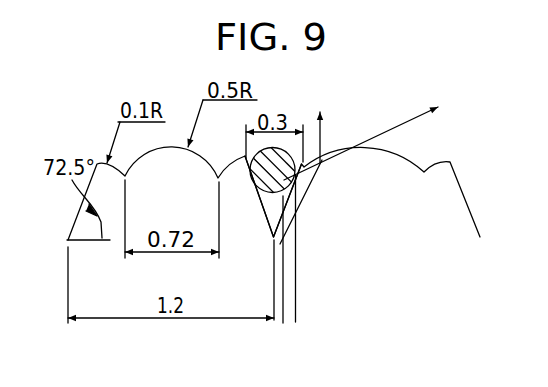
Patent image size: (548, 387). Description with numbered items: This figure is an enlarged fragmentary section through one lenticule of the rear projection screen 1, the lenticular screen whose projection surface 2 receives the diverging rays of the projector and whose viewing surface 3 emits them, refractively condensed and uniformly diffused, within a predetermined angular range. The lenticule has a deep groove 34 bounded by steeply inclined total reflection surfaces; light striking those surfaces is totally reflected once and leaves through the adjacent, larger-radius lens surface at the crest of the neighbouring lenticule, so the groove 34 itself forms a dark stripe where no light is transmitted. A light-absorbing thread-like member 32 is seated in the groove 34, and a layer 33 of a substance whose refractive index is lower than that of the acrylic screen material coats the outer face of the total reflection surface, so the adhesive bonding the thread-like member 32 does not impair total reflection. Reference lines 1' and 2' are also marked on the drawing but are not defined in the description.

The rear projection screen 1 is at (282, 251).
The projection surface 2 is at (303, 262).
The viewing surface 3 is at (351, 133).
The rotated reference line 1' is at (321, 122).
The rotated reference line 2' is at (375, 172).
The thread-like member 32 is at (257, 165).
The layer 33 is at (378, 164).
The groove 34 is at (279, 205).